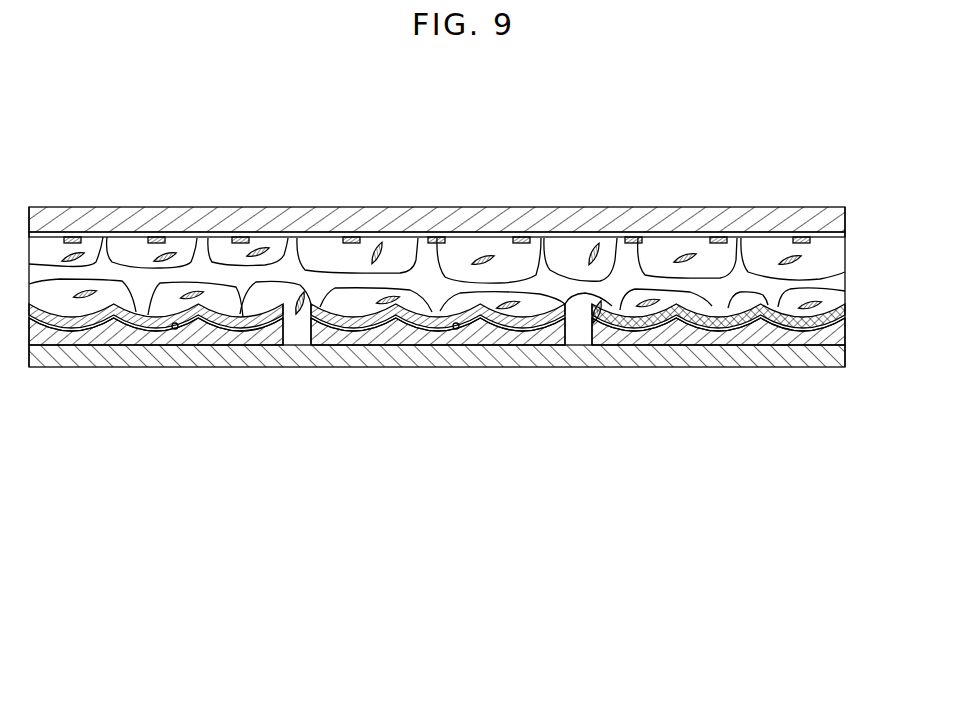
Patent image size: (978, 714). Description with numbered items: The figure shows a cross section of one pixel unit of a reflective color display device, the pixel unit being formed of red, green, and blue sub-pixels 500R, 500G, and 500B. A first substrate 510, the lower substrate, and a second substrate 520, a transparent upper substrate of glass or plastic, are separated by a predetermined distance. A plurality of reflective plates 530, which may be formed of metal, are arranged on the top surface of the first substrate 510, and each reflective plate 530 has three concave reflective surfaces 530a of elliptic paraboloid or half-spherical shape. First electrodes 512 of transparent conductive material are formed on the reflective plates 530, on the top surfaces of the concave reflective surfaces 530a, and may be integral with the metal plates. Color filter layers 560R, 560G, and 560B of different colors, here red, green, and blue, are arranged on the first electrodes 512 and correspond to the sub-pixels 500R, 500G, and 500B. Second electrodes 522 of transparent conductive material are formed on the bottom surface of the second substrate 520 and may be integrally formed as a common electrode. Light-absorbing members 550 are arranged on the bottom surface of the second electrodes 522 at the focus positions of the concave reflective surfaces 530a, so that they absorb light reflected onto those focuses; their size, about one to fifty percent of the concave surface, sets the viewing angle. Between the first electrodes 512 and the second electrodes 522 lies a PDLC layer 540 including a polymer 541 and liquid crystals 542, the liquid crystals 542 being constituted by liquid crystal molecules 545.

The red sub-pixel 500R is at (282, 162).
The green sub-pixel 500G is at (565, 162).
The blue sub-pixel 500B is at (845, 162).
The first substrate 510 is at (845, 363).
The first electrode 512 is at (70, 330).
The second substrate 520 is at (845, 218).
The second electrode 522 is at (845, 234).
The reflective plate 530 is at (120, 337).
The concave reflective surface 530a is at (175, 329).
The PDLC layer 540 is at (495, 280).
The polymer 541 is at (845, 273).
The liquid crystals 542 is at (845, 295).
The liquid crystal molecules 545 is at (808, 307).
The light-absorbing member 550 is at (238, 237).
The red color filter layer 560R is at (240, 322).
The green color filter layer 560G is at (520, 322).
The blue color filter layer 560B is at (718, 320).